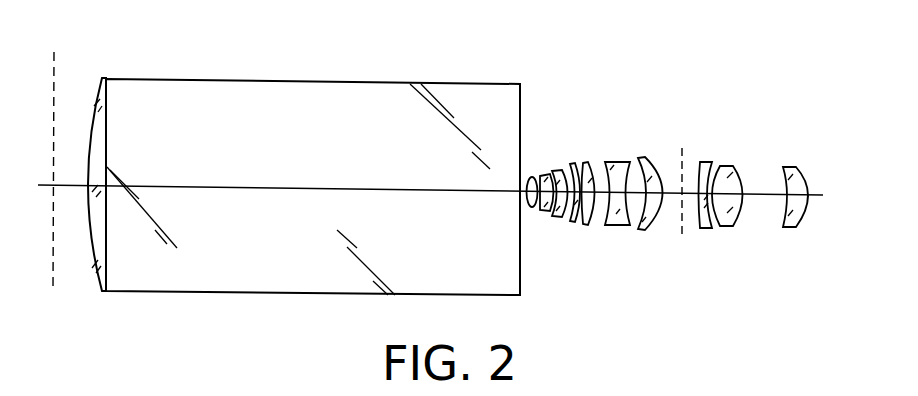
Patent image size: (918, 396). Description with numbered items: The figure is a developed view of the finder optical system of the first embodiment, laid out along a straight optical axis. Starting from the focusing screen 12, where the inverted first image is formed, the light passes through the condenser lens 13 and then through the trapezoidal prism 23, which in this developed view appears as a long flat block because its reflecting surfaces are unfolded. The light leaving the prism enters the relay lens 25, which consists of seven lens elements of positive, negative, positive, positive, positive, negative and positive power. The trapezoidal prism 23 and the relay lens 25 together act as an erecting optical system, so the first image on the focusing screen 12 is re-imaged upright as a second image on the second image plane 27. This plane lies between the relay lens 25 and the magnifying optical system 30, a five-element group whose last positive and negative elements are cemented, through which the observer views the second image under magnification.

The focusing screen 12 is at (51, 158).
The condenser lens 13 is at (87, 92).
The trapezoidal prism 23 is at (310, 88).
The relay lens 25 is at (662, 140).
The second image plane 27 is at (682, 147).
The magnifying optical system 30 is at (808, 145).